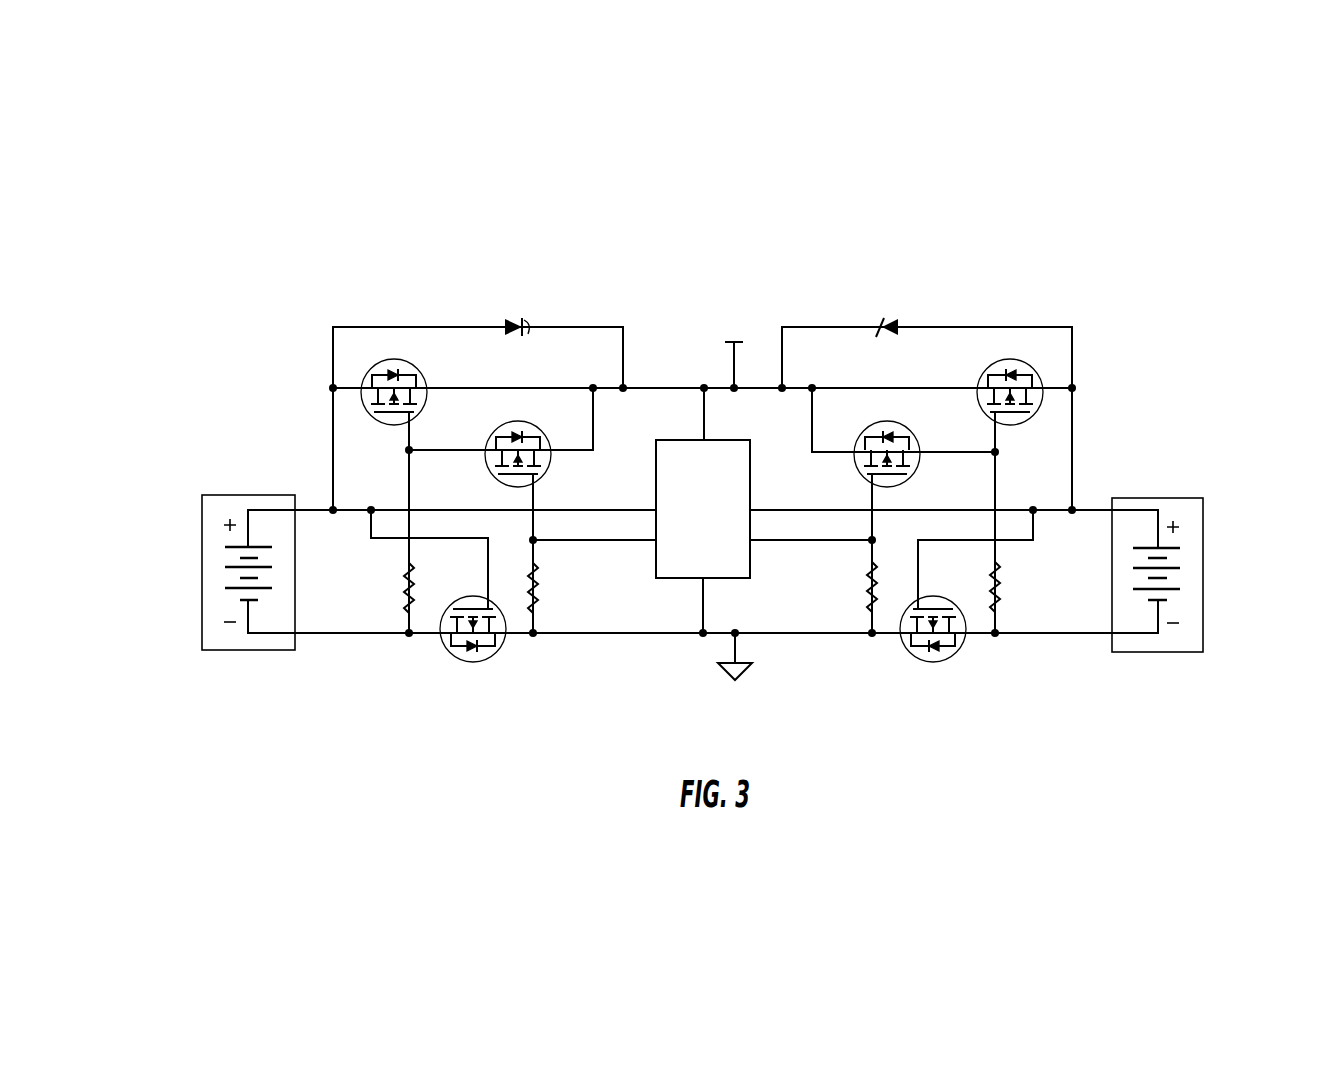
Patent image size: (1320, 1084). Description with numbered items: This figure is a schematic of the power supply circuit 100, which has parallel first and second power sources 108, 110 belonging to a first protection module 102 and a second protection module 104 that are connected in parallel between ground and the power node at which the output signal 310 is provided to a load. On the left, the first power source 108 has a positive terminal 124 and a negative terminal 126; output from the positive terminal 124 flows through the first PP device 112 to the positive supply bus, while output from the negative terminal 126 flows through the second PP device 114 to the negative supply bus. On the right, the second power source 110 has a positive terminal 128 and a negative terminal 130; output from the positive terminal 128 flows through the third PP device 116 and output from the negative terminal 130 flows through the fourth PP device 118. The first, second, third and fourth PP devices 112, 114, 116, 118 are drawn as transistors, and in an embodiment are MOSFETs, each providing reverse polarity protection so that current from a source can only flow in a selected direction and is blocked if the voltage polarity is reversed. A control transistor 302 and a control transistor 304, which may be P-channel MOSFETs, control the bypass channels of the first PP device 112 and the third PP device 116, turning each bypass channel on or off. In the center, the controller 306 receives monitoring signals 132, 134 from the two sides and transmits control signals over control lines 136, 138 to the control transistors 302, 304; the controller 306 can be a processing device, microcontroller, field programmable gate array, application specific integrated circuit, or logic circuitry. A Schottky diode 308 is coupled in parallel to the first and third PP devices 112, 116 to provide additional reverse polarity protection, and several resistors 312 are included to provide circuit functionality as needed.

The power supply circuit 100 is at (1035, 263).
The first protection module 102 is at (303, 290).
The second protection module 104 is at (1140, 364).
The first power source 108 is at (214, 543).
The second power source 110 is at (1188, 560).
The first PP device 112 is at (370, 380).
The second PP device 114 is at (455, 662).
The third PP device 116 is at (1000, 365).
The fourth PP device 118 is at (945, 662).
The positive terminal 124 is at (225, 517).
The negative terminal 126 is at (230, 622).
The positive terminal 128 is at (1182, 518).
The negative terminal 130 is at (1172, 632).
The monitoring signal 132 is at (546, 509).
The monitoring signal 134 is at (835, 508).
The control line 136 is at (565, 542).
The control line 138 is at (826, 543).
The control transistor 302 is at (548, 473).
The control transistor 304 is at (907, 480).
The controller 306 is at (670, 580).
The Schottky diode 308 is at (503, 319).
The output signal 310 is at (737, 356).
The resistor 312 is at (407, 602).